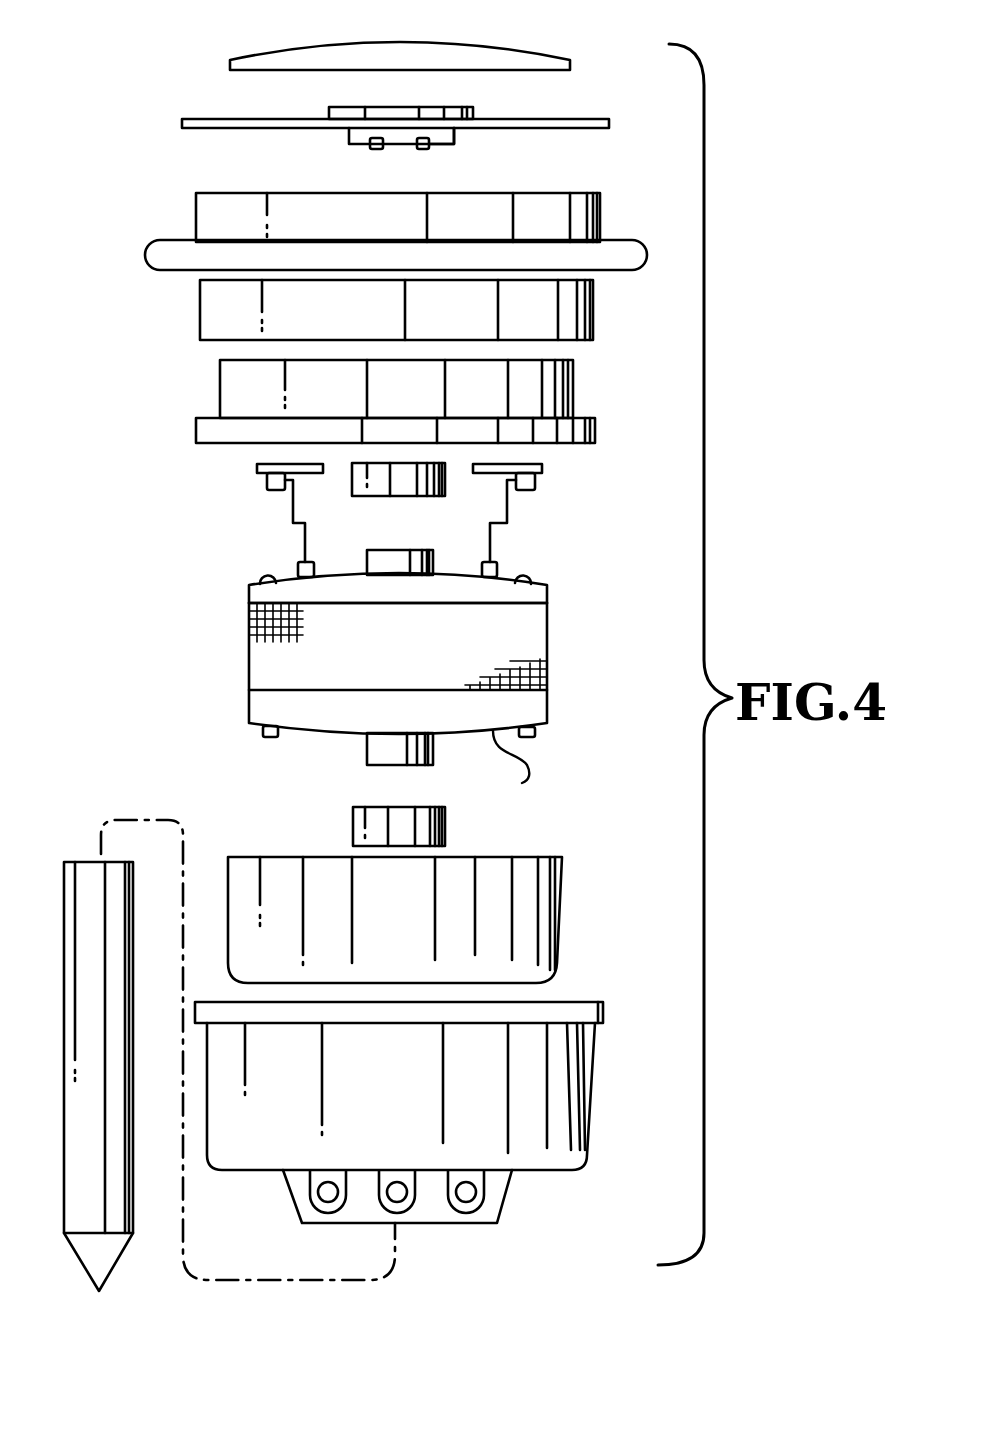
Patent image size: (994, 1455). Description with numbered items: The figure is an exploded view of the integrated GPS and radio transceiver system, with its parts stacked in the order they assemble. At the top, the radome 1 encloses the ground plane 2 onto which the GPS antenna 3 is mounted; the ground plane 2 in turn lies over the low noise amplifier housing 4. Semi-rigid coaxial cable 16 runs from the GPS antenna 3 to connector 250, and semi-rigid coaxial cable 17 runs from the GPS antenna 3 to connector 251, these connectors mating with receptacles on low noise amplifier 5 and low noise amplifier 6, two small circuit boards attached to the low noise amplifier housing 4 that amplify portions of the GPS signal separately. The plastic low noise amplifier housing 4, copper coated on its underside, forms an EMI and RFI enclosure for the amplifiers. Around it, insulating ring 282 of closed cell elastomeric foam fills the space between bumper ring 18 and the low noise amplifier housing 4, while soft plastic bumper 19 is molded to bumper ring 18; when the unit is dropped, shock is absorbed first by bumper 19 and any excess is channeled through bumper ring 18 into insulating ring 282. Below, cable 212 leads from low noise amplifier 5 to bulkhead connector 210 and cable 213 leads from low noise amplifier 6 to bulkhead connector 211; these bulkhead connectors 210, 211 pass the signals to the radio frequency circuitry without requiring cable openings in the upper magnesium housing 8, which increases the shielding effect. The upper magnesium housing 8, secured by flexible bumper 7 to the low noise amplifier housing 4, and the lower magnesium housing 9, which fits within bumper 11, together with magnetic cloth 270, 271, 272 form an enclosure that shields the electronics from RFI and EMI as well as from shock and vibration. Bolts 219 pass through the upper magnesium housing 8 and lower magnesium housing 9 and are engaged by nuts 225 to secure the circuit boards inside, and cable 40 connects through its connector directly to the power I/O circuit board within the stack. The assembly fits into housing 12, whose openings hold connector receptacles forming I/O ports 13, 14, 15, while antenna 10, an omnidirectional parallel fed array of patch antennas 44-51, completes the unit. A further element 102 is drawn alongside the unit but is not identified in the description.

The radome 1 is at (538, 52).
The ground plane 2 is at (210, 119).
The GPS antenna 3 is at (470, 110).
The semi-rigid coaxial cable 16 is at (347, 134).
The semi-rigid coaxial cable 17 is at (455, 137).
The connector 250 is at (376, 150).
The connector 251 is at (423, 150).
The bumper ring 18 is at (196, 218).
The bumper 19 is at (145, 255).
The insulating ring 282 is at (200, 322).
The low noise amplifier housing 4 is at (220, 375).
The low noise amplifier 5 is at (257, 470).
The low noise amplifier 6 is at (545, 468).
The flexible bumper 7 is at (410, 485).
The cable 212 is at (293, 508).
The cable 213 is at (508, 505).
The bulkhead connector 210 is at (298, 565).
The bulkhead connector 211 is at (497, 565).
The magnetic cloth 271 is at (447, 573).
The bolts 219 is at (268, 578).
The upper magnesium housing 8 is at (265, 598).
The magnetic cloth 270 is at (265, 652).
The lower magnesium housing 9 is at (275, 707).
The nuts 225 is at (263, 740).
The magnetic cloth 272 is at (315, 737).
The cable 40 is at (527, 758).
The bumper 11 is at (445, 820).
The patch antennas 44-51 is at (555, 848).
The antenna 10 is at (417, 930).
The housing 12 is at (417, 1113).
The I/O port 13 is at (326, 1202).
The I/O port 14 is at (397, 1198).
The I/O port 15 is at (470, 1190).
The ground stake 102 is at (83, 862).